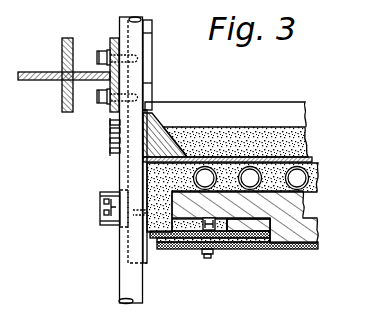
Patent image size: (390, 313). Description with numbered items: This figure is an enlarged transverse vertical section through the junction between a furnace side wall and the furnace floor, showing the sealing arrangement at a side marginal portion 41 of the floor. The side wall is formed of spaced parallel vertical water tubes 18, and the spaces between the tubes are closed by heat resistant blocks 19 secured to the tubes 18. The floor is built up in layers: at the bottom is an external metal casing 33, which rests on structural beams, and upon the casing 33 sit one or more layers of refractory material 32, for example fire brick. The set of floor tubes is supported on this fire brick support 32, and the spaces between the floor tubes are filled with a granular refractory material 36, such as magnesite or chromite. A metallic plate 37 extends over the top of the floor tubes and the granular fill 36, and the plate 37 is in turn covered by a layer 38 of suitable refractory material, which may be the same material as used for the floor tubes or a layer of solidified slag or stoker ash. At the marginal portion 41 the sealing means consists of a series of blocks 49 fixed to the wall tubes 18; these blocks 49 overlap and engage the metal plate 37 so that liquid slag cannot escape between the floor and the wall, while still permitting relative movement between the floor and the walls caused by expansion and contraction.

The water tube 18 is at (118, 22).
The heat resistant block 19 is at (152, 58).
The marginal portion 41 is at (176, 116).
The block 49 is at (167, 123).
The layer of refractory material 38 is at (310, 140).
The metallic plate 37 is at (257, 157).
The granular refractory material 36 is at (320, 180).
The refractory material 32 is at (317, 214).
The metal casing 33 is at (288, 249).